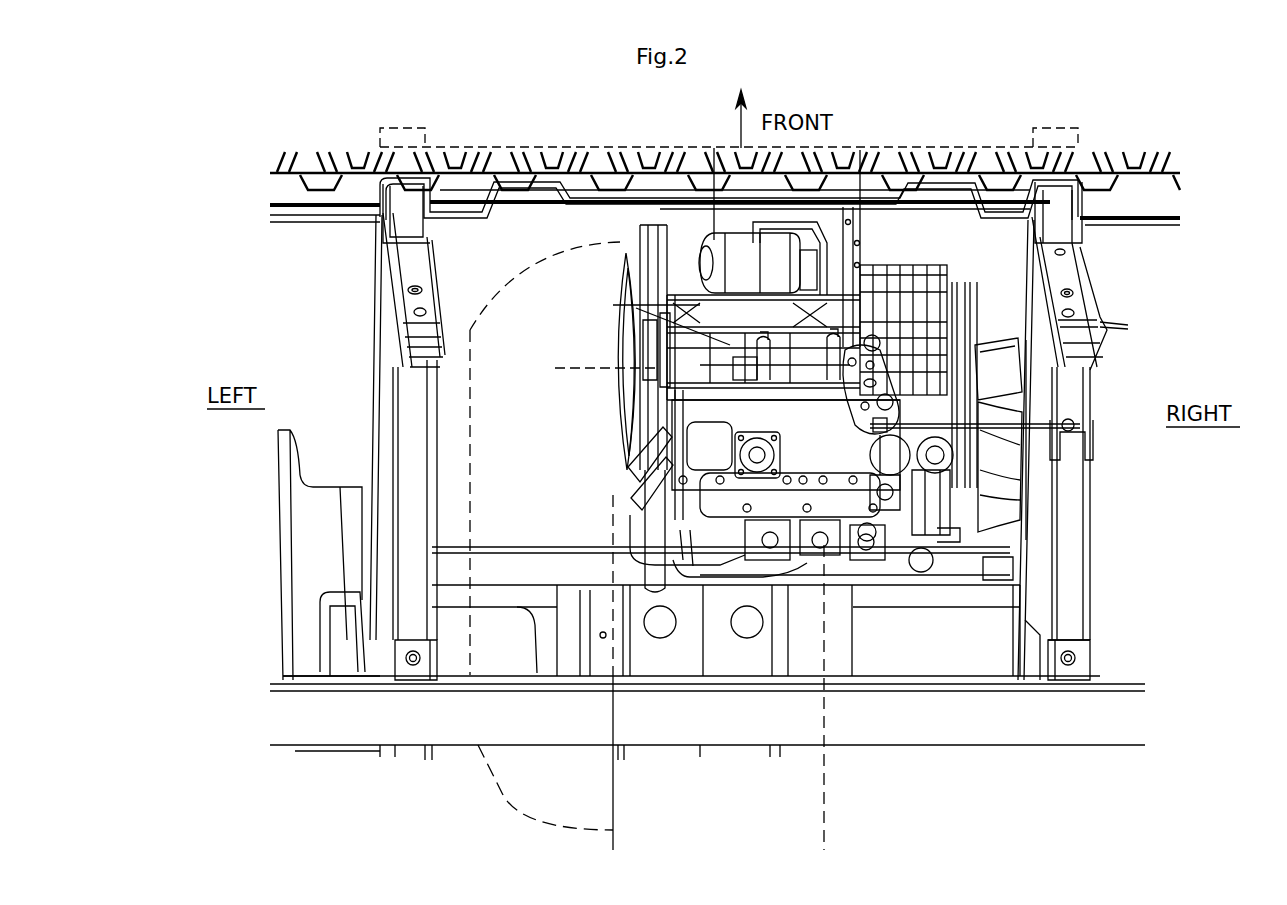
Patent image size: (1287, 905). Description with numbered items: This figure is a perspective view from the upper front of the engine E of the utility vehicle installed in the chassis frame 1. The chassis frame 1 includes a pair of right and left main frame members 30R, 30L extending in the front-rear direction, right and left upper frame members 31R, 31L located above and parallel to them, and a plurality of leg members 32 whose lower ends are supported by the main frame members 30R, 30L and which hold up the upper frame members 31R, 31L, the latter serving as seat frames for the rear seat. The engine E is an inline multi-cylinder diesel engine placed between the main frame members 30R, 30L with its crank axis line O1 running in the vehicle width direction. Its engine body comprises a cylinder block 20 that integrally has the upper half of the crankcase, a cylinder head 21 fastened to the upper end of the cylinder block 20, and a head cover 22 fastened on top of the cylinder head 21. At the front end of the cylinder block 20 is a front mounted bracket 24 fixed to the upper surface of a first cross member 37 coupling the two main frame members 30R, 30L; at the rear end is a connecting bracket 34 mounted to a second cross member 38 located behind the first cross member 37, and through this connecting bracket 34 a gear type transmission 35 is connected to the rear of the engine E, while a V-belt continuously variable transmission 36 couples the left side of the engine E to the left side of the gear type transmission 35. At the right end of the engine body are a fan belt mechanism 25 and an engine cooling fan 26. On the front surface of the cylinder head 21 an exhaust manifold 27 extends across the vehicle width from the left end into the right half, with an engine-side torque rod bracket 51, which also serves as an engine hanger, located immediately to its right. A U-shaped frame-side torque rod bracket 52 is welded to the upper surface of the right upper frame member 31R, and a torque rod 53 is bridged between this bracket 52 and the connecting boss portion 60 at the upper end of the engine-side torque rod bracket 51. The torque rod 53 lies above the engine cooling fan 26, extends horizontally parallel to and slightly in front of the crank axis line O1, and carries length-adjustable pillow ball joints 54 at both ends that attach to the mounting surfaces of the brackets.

The chassis frame 1 is at (1124, 656).
The cylinder block 20 is at (908, 562).
The cylinder head 21 is at (637, 480).
The head cover 22 is at (705, 437).
The front mounted bracket 24 is at (832, 232).
The fan belt mechanism 25 is at (966, 282).
The engine cooling fan 26 is at (1001, 347).
The exhaust manifold 27 is at (636, 308).
The left main frame member 30L is at (392, 378).
The right main frame member 30R is at (1030, 397).
The left upper frame member 31L is at (420, 436).
The right upper frame member 31R is at (1068, 580).
The leg member 32 is at (413, 265).
The connecting bracket 34 is at (682, 565).
The gear type transmission 35 is at (826, 778).
The V-belt continuously variable transmission 36 is at (467, 295).
The first cross member 37 is at (882, 147).
The second cross member 38 is at (946, 578).
The engine-side torque rod bracket 51 is at (888, 365).
The frame-side torque rod bracket 52 is at (1095, 440).
The torque rod 53 is at (1020, 492).
The pillow ball joint 54 is at (858, 430).
The connecting boss portion 60 is at (838, 420).
The engine E is at (592, 411).
The crank axis line O1 is at (562, 362).